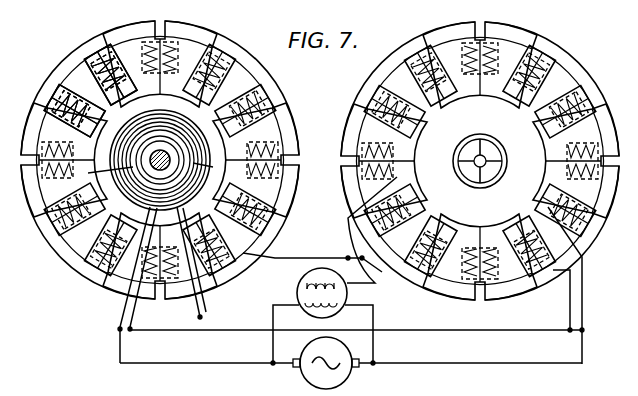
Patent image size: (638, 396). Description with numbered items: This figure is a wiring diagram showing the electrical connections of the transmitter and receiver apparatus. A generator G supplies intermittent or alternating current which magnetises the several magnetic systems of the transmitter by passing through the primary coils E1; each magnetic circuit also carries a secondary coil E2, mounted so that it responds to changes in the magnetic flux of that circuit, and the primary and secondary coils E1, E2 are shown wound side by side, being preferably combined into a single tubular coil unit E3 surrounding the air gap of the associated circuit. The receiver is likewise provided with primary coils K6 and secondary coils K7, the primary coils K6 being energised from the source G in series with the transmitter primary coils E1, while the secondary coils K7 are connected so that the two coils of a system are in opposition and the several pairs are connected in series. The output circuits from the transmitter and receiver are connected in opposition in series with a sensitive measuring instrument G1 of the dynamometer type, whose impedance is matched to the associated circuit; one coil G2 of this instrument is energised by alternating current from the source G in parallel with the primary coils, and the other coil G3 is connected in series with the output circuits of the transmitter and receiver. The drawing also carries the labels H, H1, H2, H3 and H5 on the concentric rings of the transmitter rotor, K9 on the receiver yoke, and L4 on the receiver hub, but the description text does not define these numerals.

The primary coil E1 is at (80, 62).
The secondary coil E2 is at (100, 42).
The tubular coil unit E3 is at (92, 74).
The rotor winding ring H is at (144, 133).
The rotor winding ring H1 is at (165, 138).
The rotor winding ring H2 is at (180, 125).
The rotor winding ring H3 is at (188, 138).
The rotor core H5 is at (198, 169).
The primary coil of the receiver K6 is at (525, 66).
The secondary coil of the receiver K7 is at (548, 62).
The field core yoke K9 is at (548, 88).
The rotor hub L4 is at (483, 189).
The generator G is at (338, 371).
The measuring instrument G1 is at (347, 290).
The coil of the measuring instrument G2 is at (273, 305).
The coil of the measuring instrument G3 is at (318, 283).